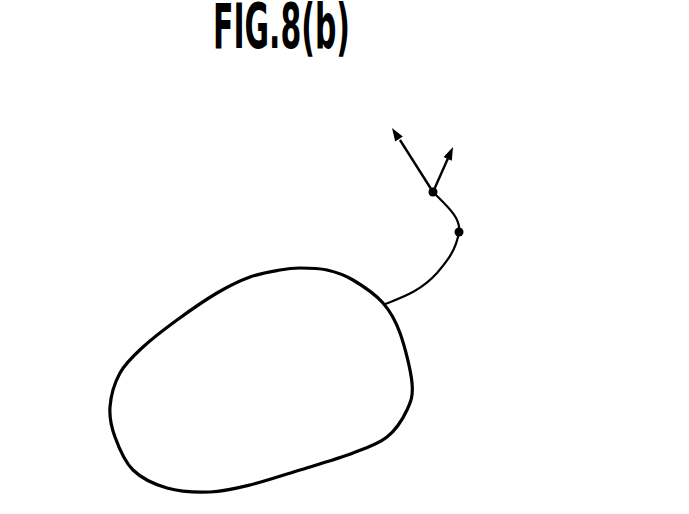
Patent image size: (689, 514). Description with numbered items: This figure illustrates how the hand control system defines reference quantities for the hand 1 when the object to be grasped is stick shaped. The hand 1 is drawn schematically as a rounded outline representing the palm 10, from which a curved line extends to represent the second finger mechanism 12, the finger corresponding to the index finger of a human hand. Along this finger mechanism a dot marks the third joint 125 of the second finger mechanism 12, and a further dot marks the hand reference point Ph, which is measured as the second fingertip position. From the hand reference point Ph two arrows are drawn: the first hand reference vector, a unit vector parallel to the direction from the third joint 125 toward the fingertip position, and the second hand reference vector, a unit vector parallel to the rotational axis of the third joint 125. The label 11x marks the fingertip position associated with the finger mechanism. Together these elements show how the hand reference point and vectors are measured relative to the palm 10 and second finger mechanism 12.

The hand 1 is at (112, 290).
The palm 10 is at (300, 363).
The second finger mechanism 12 is at (485, 319).
The third joint of the second finger mechanism 125 is at (466, 233).
The hand reference point Ph is at (433, 192).
The tangent/normal direction at point 11x is at (452, 189).